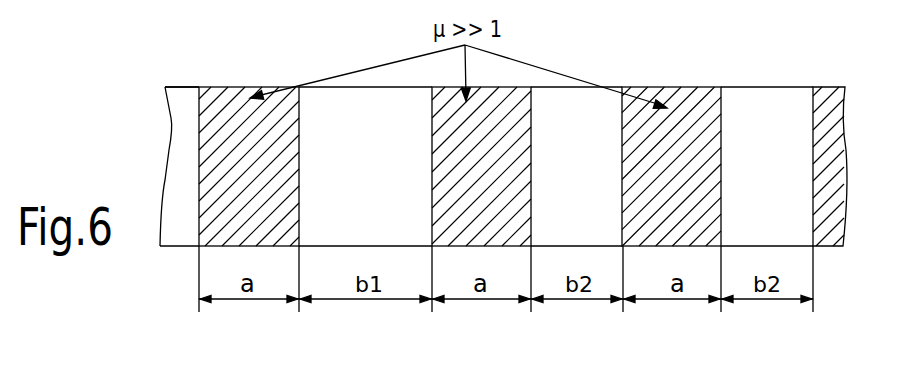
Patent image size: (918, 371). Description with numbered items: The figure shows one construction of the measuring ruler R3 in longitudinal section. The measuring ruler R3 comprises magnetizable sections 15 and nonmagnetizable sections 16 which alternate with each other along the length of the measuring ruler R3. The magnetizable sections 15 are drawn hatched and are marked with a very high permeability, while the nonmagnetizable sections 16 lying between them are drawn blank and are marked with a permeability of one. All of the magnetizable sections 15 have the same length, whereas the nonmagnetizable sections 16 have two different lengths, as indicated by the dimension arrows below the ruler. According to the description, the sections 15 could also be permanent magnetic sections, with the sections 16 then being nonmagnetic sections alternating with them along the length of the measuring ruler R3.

The magnetizable sections 15 is at (247, 95).
The nonmagnetizable sections 16 is at (178, 94).
The measuring ruler R3 is at (649, 66).